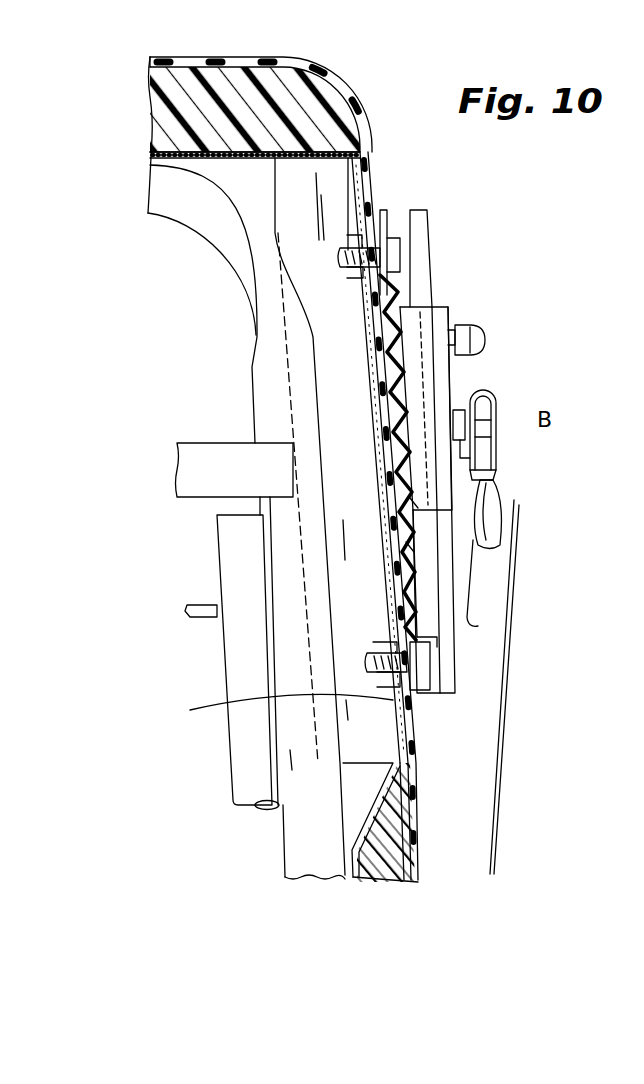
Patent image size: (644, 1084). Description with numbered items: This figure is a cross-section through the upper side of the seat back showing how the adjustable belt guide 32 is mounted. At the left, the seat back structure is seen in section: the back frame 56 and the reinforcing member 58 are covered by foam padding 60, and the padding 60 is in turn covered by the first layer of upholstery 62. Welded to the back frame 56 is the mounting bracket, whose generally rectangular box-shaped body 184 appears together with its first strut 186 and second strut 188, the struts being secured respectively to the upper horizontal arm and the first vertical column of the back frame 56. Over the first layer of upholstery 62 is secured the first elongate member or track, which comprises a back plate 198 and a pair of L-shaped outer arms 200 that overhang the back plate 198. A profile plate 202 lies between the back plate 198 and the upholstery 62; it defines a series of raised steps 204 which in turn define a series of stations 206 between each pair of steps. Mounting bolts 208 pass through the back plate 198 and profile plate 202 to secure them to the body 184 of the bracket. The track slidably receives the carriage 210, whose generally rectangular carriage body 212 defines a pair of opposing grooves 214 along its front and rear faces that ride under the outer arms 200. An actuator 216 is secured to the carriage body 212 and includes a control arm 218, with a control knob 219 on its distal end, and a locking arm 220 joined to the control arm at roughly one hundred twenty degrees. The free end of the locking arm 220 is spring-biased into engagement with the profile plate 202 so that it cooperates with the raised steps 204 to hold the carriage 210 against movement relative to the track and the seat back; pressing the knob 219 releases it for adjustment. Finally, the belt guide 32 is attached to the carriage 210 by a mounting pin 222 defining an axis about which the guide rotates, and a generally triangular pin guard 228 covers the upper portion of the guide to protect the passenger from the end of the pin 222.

The belt guide 32 is at (500, 402).
The back frame 56 is at (281, 845).
The reinforcing member 58 is at (218, 662).
The foam padding 60 is at (157, 108).
The first layer of upholstery 62 is at (150, 59).
The body 184 is at (266, 710).
The first strut 186 is at (150, 156).
The second strut 188 is at (393, 793).
The back plate 198 is at (382, 211).
The L-shaped outer arms 200 is at (452, 577).
The profile plate 202 is at (384, 210).
The raised steps 204 is at (385, 366).
The stations 206 is at (396, 306).
The mounting bolts 208 is at (427, 677).
The carriage 210 is at (453, 313).
The carriage body 212 is at (417, 503).
The grooves 214 is at (413, 547).
The actuator 216 is at (453, 361).
The control arm 218 is at (483, 327).
The control knob 219 is at (485, 339).
The locking arm 220 is at (365, 338).
The mounting pin 222 is at (493, 467).
The pin guard 228 is at (497, 447).